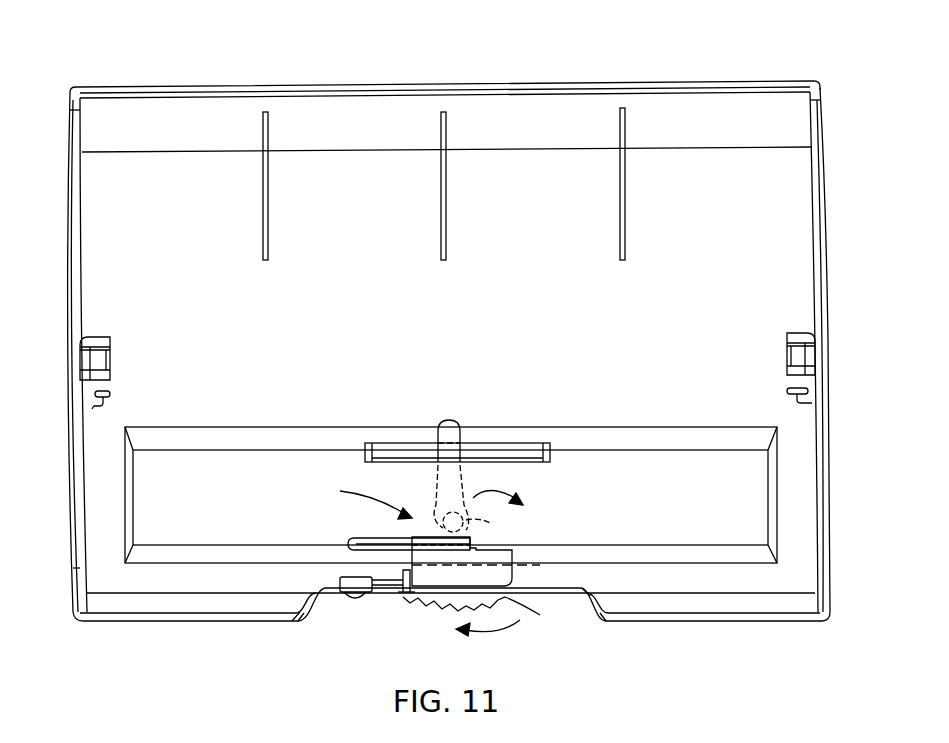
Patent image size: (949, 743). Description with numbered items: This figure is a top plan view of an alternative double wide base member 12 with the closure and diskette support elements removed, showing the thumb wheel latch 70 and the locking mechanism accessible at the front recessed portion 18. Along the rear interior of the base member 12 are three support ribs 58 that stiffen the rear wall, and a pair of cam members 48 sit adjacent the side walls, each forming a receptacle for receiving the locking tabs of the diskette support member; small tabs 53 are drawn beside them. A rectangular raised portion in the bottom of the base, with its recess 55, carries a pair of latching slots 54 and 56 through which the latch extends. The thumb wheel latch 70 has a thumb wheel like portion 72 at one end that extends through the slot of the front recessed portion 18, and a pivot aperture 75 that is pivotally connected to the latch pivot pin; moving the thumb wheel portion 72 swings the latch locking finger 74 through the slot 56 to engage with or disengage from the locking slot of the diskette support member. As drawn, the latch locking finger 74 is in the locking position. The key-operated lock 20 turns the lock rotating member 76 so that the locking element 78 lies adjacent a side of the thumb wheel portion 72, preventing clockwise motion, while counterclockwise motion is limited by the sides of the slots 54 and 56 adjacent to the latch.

The base member 12 is at (677, 624).
The front recessed portion 18 is at (521, 634).
The lock 20 is at (352, 603).
The cam members 48 is at (80, 342).
The tab 53 is at (92, 409).
The latching slot 54 is at (348, 542).
The tray recess 55 is at (750, 531).
The latching slot 56 is at (545, 466).
The support ribs 58 is at (622, 108).
The thumb wheel latch 70 is at (357, 498).
The thumb wheel portion 72 is at (497, 600).
The latch locking finger 74 is at (462, 422).
The pivot aperture 75 is at (505, 523).
The lock rotating member 76 is at (345, 592).
The locking element 78 is at (396, 594).